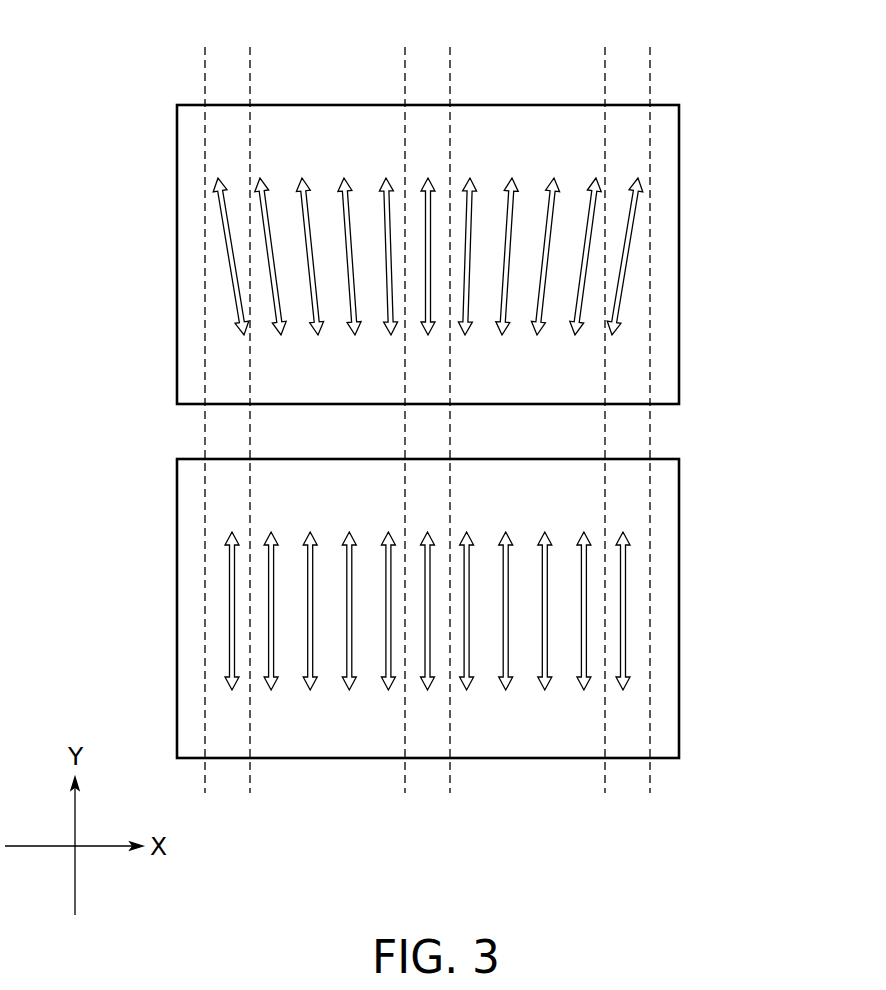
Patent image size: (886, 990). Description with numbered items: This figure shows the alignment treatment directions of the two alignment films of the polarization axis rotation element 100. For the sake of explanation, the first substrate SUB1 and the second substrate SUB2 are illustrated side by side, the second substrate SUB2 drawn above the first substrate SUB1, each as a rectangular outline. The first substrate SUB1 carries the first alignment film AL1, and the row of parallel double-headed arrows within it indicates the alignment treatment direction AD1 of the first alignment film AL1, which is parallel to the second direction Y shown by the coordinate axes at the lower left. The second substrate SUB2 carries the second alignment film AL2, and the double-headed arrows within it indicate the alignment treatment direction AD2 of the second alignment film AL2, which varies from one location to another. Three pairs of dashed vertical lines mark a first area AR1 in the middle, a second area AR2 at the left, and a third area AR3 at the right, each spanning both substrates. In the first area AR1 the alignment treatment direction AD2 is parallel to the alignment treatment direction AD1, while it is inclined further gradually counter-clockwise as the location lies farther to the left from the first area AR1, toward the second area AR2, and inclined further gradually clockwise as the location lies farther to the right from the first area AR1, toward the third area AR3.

The polarization axis rotation element 100 is at (489, 428).
The first substrate SUB1 is at (680, 691).
The second substrate SUB2 is at (680, 335).
The first alignment film AL1 is at (493, 688).
The second alignment film AL2 is at (487, 221).
The alignment treatment direction of the first alignment film AD1 is at (469, 652).
The alignment treatment direction of the second alignment film AD2 is at (473, 226).
The first area AR1 is at (450, 63).
The second area AR2 is at (250, 63).
The third area AR3 is at (650, 63).